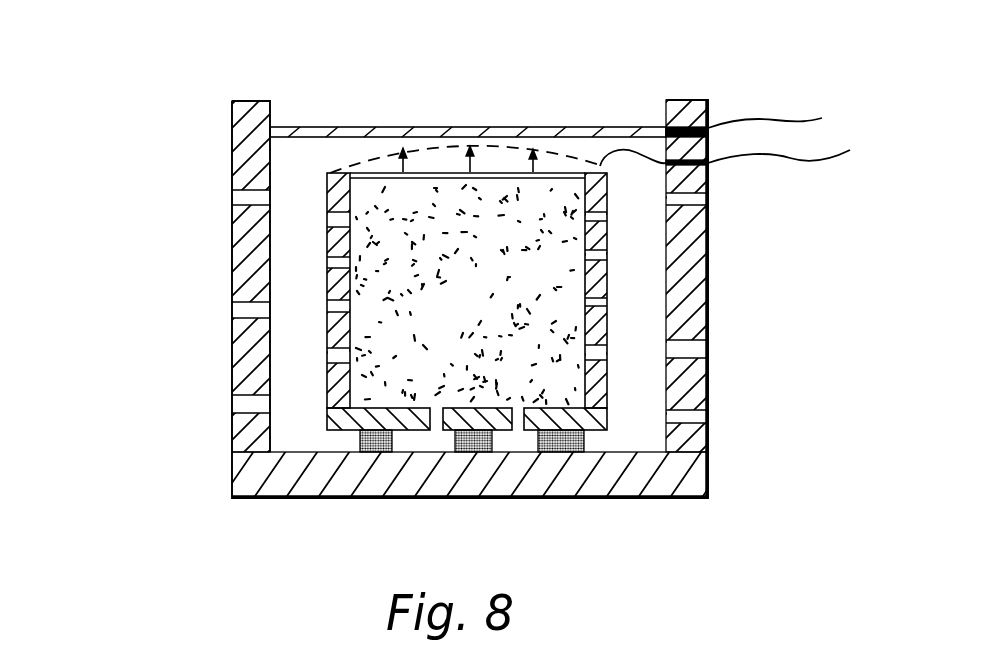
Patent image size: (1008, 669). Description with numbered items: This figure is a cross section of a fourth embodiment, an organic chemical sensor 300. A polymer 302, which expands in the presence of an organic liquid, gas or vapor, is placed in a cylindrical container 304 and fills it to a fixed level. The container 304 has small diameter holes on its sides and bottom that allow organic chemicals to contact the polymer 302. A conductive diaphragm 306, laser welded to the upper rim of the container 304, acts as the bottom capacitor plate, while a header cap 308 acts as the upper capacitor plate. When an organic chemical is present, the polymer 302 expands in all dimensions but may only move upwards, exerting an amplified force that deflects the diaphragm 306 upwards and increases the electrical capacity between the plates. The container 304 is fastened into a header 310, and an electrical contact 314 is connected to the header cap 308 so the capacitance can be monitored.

The organic chemical sensor 300 is at (308, 293).
The polymer 302 is at (475, 326).
The cylindrical container 304 is at (605, 330).
The diaphragm 306 is at (487, 149).
The header cap 308 is at (560, 127).
The header 310 is at (695, 310).
The electrical contact 314 is at (770, 116).